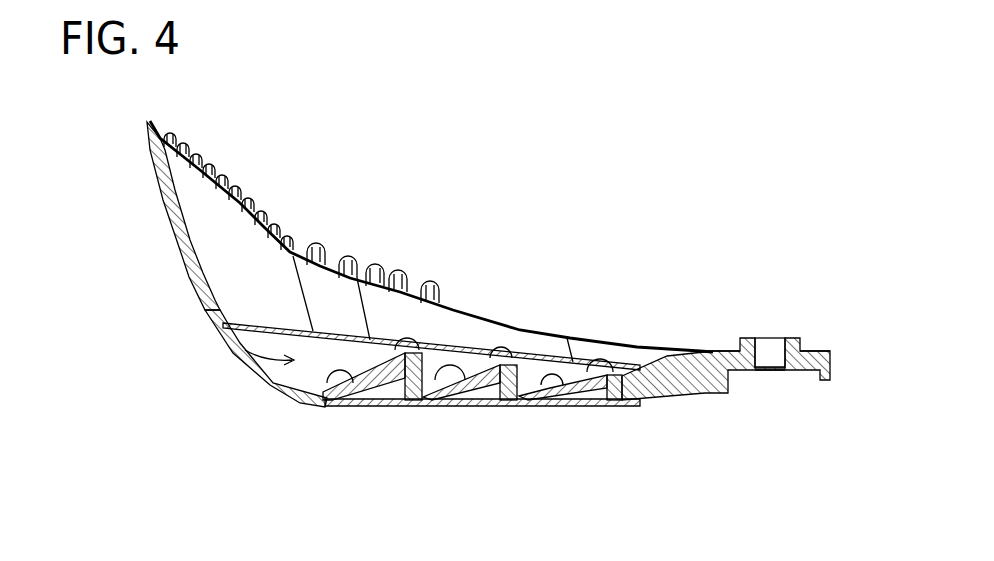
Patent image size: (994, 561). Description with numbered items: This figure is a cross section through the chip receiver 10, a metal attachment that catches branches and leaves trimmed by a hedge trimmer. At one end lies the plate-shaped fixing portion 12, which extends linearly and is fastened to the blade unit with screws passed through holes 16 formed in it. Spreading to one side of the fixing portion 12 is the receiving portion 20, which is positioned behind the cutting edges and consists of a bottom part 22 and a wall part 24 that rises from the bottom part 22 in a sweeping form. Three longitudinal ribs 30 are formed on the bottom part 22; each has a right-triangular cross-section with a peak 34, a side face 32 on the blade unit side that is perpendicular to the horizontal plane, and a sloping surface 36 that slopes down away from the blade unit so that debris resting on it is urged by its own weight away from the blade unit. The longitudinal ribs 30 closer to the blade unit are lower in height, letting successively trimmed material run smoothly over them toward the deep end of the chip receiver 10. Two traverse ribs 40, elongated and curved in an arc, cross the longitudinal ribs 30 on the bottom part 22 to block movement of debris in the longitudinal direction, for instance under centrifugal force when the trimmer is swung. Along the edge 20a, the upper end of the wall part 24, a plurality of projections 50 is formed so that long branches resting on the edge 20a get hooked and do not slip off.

The chip receiver 10 is at (760, 144).
The fixing portion 12 is at (822, 348).
The holes 16 is at (783, 350).
The receiving portion 20 is at (113, 254).
The edge of the receiving portion 20a is at (545, 332).
The bottom part 22 is at (237, 351).
The wall part 24 is at (224, 270).
The longitudinal ribs 30 is at (410, 483).
The side face 32 is at (633, 403).
The peak 34 is at (583, 400).
The sloping surface 36 is at (540, 400).
The traverse ribs 40 is at (473, 350).
The projections 50 is at (355, 262).